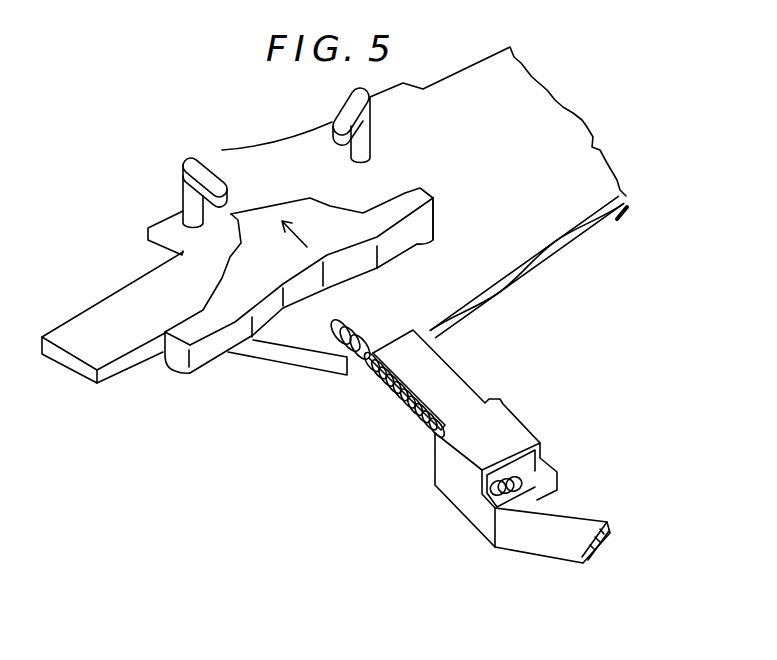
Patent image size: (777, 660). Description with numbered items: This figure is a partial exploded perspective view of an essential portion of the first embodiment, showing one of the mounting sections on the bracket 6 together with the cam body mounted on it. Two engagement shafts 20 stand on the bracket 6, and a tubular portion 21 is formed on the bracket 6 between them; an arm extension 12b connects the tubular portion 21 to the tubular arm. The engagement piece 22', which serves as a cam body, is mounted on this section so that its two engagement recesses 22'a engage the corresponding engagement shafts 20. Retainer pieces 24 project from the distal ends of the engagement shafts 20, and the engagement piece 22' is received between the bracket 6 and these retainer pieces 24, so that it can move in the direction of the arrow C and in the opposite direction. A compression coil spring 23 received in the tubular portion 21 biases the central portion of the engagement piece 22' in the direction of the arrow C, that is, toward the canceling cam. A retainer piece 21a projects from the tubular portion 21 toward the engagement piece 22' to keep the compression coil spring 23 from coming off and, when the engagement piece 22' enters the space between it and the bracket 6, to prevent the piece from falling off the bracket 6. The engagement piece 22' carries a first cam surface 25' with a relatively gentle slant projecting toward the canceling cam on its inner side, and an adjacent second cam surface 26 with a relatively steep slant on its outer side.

The bracket 6 is at (100, 317).
The engagement shaft 20 is at (188, 207).
The retainer piece 24 is at (216, 184).
The engagement piece 22' is at (311, 274).
The engagement recess 22'a is at (304, 259).
The first cam surface 25' is at (332, 184).
The second cam surface 26 is at (237, 238).
The arrow C is at (294, 243).
The tubular portion 21 is at (514, 426).
The retainer piece 21a is at (430, 355).
The compression coil spring 23 is at (370, 386).
The arm extension 12b is at (547, 537).